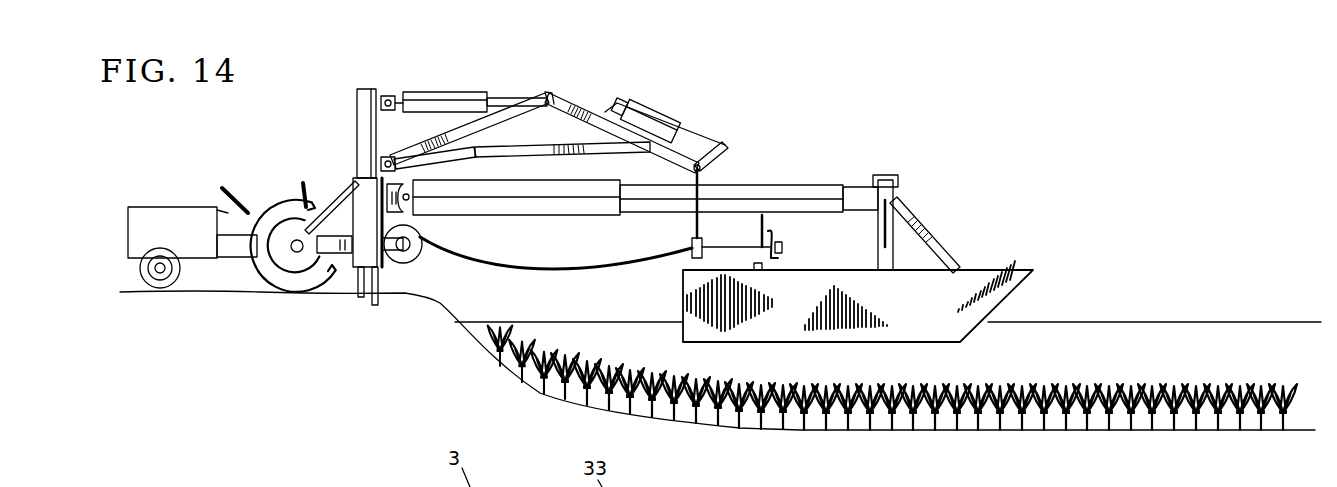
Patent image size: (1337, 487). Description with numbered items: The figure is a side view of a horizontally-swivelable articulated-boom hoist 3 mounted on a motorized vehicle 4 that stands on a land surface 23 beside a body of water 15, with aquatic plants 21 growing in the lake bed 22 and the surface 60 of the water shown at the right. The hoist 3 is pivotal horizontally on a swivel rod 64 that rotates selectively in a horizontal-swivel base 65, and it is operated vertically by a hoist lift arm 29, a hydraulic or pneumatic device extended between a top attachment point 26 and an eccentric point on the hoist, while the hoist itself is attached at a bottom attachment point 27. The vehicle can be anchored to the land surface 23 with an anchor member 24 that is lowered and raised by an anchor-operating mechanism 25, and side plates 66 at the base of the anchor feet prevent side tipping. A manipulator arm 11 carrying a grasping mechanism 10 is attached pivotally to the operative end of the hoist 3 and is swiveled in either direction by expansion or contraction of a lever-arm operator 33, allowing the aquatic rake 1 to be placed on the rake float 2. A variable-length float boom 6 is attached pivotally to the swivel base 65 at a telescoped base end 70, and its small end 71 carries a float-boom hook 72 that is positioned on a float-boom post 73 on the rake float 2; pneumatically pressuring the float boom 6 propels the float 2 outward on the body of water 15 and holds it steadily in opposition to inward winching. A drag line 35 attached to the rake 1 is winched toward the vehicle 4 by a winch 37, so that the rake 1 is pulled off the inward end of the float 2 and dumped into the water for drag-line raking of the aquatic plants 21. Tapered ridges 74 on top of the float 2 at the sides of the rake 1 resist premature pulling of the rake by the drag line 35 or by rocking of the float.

The aquatic rake 1 is at (806, 247).
The rake float 2 is at (780, 330).
The articulated-boom hoist 3 is at (695, 101).
The motorized vehicle 4 is at (196, 207).
The variable-length float boom 6 is at (797, 164).
The grasping mechanism 10 is at (690, 253).
The manipulator arm 11 is at (697, 228).
The body of water 15 is at (1135, 342).
The aquatic plants 21 is at (1283, 388).
The lake bed 22 is at (1075, 430).
The land surface 23 is at (218, 294).
The anchor member 24 is at (370, 312).
The anchor-operating mechanism 25 is at (385, 274).
The top attachment point 26 is at (350, 186).
The bottom attachment point 27 is at (316, 262).
The hoist lift arm 29 is at (432, 92).
The lever-arm operator 33 is at (660, 110).
The drag line 35 is at (538, 268).
The winch 37 is at (418, 262).
The surface of body of water 60 is at (1213, 322).
The swivel rod 64 is at (366, 126).
The horizontal-swivel base 65 is at (366, 214).
The side plates 66 is at (358, 296).
The telescoped base end 70 is at (472, 216).
The small end 71 is at (856, 187).
The float-boom hook 72 is at (884, 175).
The float-boom post 73 is at (897, 198).
The tapered ridges 74 is at (760, 270).